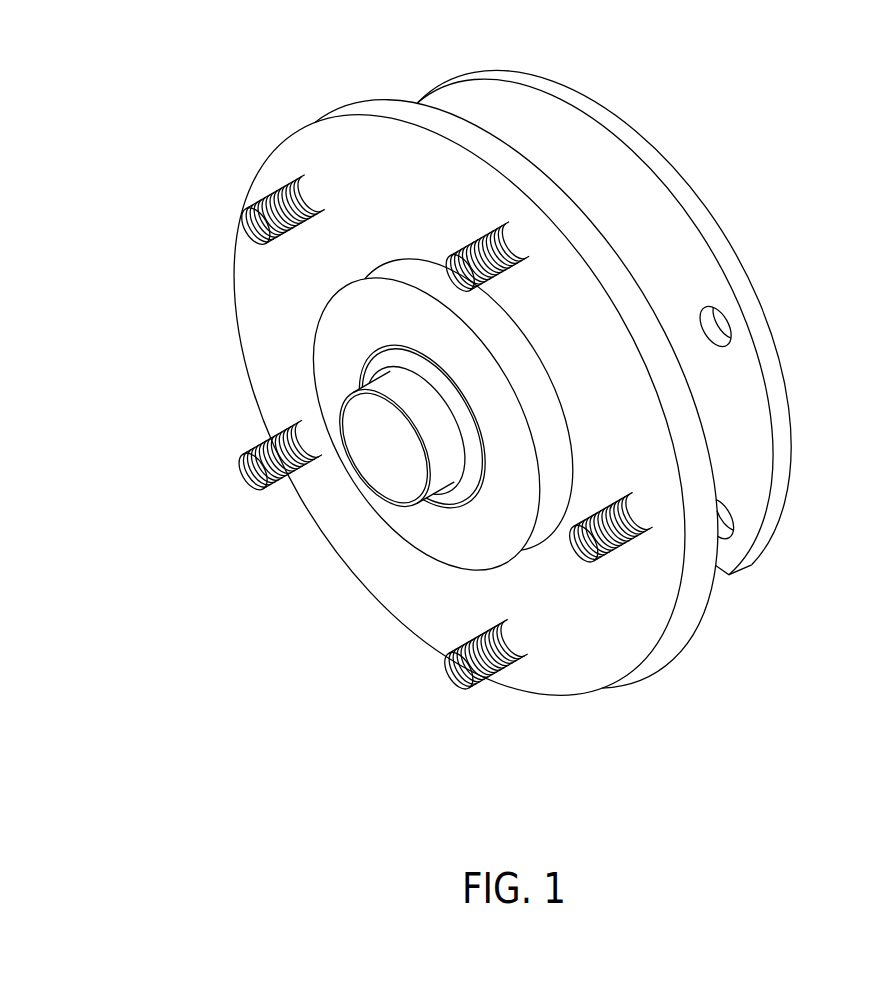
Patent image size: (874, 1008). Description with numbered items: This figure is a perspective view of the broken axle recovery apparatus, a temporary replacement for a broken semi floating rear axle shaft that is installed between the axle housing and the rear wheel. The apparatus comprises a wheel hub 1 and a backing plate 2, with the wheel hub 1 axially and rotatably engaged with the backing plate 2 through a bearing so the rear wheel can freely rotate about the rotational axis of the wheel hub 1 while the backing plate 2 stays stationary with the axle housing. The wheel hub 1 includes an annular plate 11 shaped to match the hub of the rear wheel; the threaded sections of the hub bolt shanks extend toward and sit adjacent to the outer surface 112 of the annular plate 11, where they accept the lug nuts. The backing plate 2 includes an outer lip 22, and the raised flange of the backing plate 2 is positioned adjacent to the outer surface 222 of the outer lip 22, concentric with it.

The wheel hub 1 is at (493, 404).
The annular plate 11 is at (459, 404).
The outer surface 112 is at (411, 188).
The backing plate 2 is at (631, 309).
The outer lip 22 is at (741, 284).
The outer surface 222 is at (603, 170).